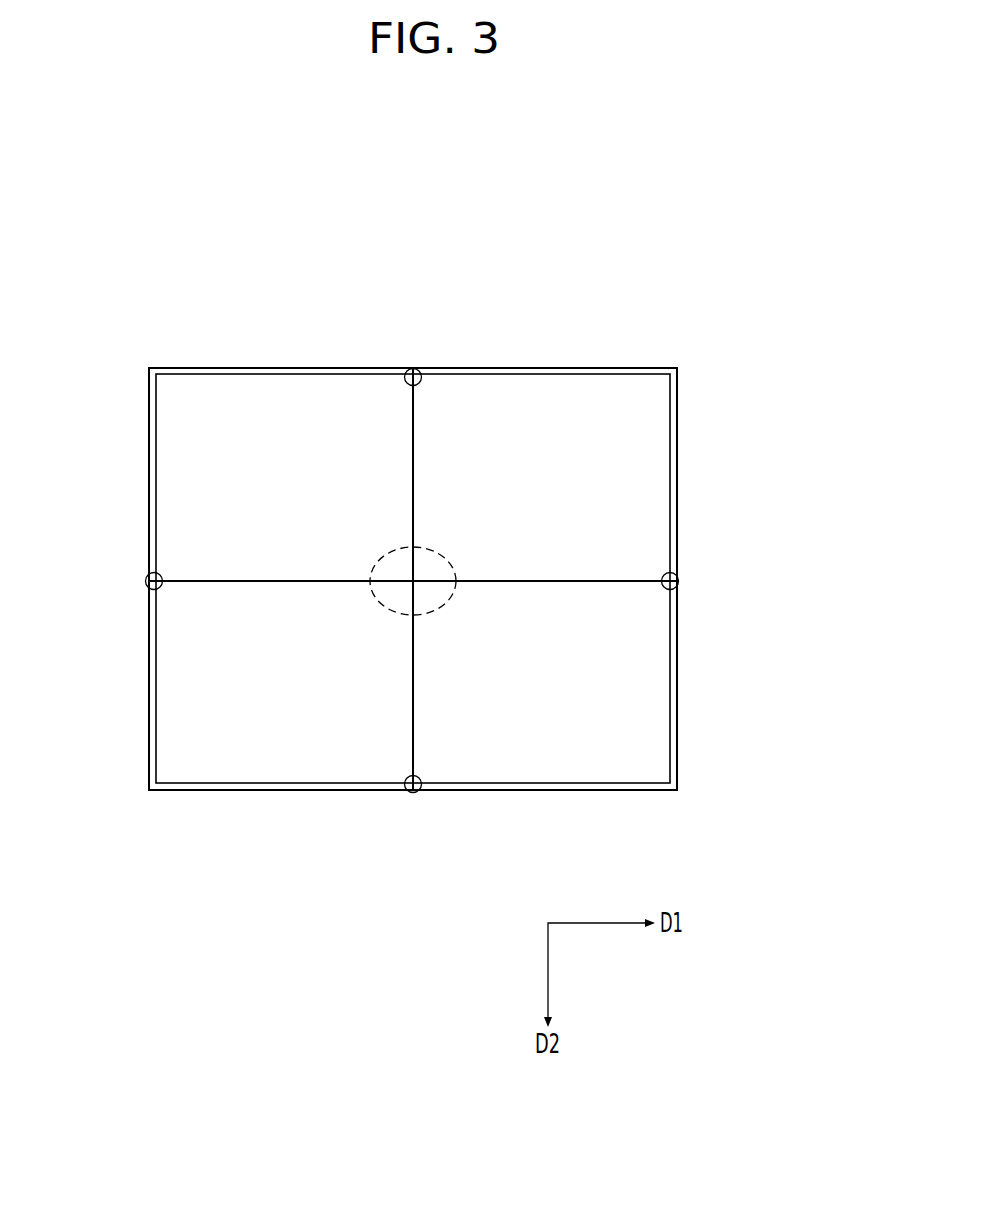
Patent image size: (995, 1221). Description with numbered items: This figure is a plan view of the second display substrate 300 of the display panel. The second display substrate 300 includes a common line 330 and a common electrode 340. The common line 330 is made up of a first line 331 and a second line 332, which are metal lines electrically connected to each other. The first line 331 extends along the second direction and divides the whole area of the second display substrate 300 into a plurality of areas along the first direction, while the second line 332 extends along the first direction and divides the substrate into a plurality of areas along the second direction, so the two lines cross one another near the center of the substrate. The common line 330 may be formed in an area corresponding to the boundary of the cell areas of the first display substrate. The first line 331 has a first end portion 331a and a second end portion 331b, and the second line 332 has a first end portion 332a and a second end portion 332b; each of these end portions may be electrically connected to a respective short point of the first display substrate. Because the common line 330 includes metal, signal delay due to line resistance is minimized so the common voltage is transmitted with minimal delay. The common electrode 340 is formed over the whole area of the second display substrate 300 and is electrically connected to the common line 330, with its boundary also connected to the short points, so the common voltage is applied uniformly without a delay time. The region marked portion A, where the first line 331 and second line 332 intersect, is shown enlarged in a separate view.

The second display substrate 300 is at (433, 172).
The common electrode 340 is at (619, 376).
The common line 330 is at (413, 579).
The first line 331 is at (413, 465).
The second line 332 is at (538, 580).
The first end portion of the first line 331a is at (417, 369).
The second end portion of the first line 331b is at (416, 794).
The first end portion of the second line 332a is at (145, 584).
The second end portion of the second line 332b is at (678, 586).
The portion A is at (432, 549).